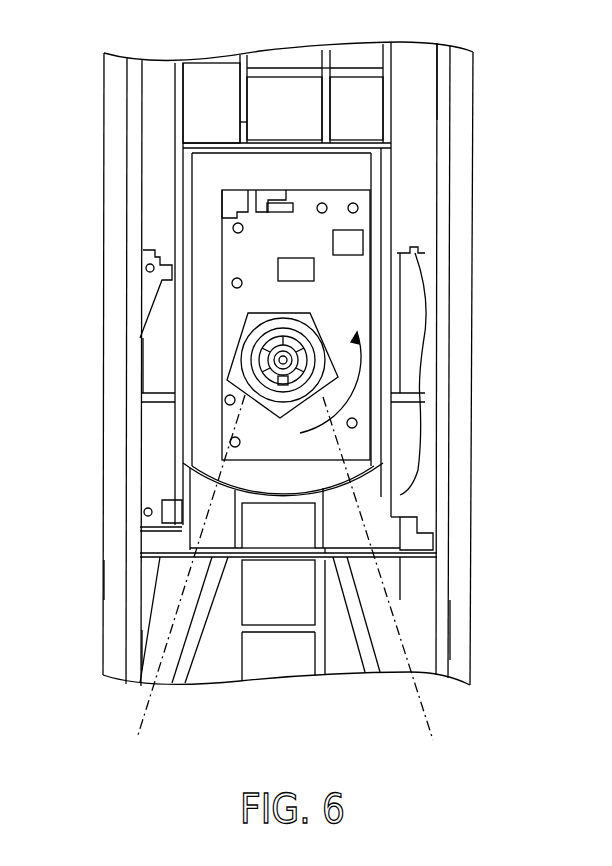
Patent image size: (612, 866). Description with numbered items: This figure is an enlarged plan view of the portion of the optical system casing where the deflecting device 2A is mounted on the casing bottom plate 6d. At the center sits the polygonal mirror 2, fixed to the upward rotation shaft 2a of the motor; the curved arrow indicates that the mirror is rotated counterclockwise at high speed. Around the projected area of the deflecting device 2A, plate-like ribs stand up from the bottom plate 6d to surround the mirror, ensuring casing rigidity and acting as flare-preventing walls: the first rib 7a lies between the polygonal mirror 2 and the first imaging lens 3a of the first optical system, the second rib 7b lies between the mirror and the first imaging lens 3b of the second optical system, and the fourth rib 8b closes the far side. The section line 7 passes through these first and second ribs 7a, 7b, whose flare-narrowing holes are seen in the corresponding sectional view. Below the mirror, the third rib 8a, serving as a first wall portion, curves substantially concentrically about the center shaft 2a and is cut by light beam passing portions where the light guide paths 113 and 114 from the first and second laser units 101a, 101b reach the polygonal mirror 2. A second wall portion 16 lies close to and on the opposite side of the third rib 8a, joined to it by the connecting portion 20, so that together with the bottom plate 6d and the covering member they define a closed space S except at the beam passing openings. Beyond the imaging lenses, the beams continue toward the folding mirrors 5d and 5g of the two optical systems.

The polygonal mirror 2 is at (316, 322).
The rotation shaft 2a is at (282, 343).
The deflecting device 2A is at (345, 310).
The first imaging lens 3a is at (148, 285).
The first imaging lens 3b is at (423, 310).
The folding mirror 5d is at (116, 584).
The folding mirror 5g is at (457, 632).
The bottom plate 6d is at (413, 58).
The section line 7 is at (82, 368).
The first rib 7a is at (178, 366).
The second rib 7b is at (385, 368).
The third rib 8a is at (287, 496).
The fourth rib 8b is at (218, 142).
The second wall portion 16 is at (282, 557).
The connecting portion 20 is at (325, 538).
The light guide path 113 is at (150, 652).
The light guide path 114 is at (407, 597).
The closed space S is at (187, 538).
The first laser unit 101a is at (150, 705).
The second laser unit 101b is at (417, 697).